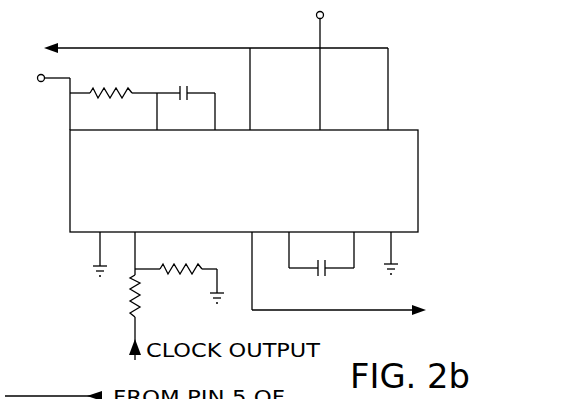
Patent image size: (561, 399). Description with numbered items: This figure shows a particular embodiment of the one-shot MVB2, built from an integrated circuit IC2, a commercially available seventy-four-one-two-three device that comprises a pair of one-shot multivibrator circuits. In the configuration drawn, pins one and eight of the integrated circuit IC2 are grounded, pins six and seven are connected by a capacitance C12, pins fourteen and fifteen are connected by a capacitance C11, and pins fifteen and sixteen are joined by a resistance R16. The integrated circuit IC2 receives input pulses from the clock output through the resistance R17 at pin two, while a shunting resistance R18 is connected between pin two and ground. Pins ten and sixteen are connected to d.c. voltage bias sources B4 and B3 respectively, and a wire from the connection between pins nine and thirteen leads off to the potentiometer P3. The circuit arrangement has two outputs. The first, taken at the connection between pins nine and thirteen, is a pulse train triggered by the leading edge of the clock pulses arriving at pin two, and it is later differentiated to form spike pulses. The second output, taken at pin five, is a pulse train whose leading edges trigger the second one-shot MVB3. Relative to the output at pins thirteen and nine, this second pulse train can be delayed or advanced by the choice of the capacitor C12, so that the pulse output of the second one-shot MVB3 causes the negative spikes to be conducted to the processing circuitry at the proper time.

The integrated circuit IC2 is at (244, 181).
The resistance R16 is at (113, 96).
The resistance R17 is at (157, 296).
The shunting resistance R18 is at (179, 273).
The capacitance C11 is at (186, 95).
The capacitance C12 is at (321, 254).
The d.c. voltage bias source B3 is at (45, 103).
The d.c. voltage bias source B4 is at (344, 68).
The potentiometer P3 connection P3 is at (204, 74).
The second 1-shot MVB3 is at (388, 288).